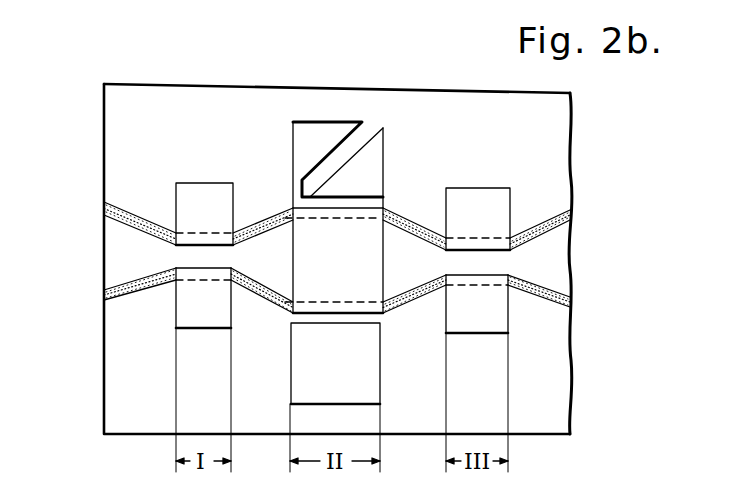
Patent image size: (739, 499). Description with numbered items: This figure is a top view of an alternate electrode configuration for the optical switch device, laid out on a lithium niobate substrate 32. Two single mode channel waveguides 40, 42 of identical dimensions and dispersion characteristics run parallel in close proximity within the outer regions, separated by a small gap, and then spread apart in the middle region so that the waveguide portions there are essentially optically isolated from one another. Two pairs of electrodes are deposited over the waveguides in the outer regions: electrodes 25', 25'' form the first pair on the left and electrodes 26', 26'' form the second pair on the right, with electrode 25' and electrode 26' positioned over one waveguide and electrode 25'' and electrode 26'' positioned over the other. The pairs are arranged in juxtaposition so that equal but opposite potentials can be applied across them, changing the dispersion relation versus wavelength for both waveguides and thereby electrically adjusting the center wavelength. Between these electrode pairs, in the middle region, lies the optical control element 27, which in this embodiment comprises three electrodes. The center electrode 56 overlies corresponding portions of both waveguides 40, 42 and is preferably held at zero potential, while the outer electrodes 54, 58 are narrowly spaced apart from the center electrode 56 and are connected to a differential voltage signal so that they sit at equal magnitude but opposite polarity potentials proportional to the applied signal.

The lithium niobate substrate 32 is at (104, 152).
The single mode channel waveguide 42 is at (566, 212).
The single mode channel waveguide 40 is at (566, 306).
The electrode 25' is at (184, 208).
The electrode 25'' is at (182, 307).
The electrode 26' is at (527, 206).
The electrode 26'' is at (531, 315).
The optical control element 27 is at (385, 331).
The center electrode 56 is at (320, 122).
The outer electrode 54 is at (378, 130).
The outer electrode 58 is at (296, 405).